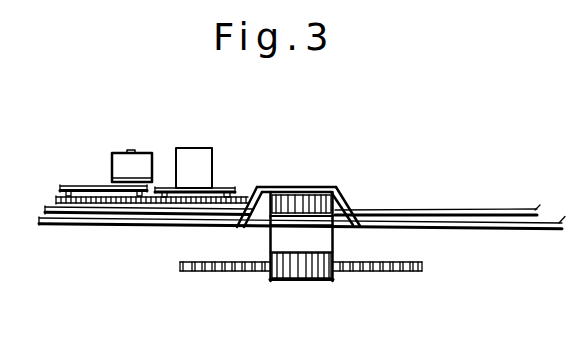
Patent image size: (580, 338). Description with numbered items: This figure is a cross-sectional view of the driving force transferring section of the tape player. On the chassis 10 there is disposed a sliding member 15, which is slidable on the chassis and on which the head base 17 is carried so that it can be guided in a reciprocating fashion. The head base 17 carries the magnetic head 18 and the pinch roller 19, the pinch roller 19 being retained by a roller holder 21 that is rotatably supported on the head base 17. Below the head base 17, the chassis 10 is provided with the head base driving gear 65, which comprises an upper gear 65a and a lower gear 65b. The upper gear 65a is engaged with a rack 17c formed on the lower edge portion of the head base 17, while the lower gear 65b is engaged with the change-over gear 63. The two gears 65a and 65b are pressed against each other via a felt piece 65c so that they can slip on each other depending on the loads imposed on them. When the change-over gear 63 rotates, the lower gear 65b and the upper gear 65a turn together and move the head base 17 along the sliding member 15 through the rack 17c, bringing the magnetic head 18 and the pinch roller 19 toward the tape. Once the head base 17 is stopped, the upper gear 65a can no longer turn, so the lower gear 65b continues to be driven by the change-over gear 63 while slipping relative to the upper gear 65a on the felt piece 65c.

The chassis 10 is at (478, 231).
The sliding member 15 is at (468, 209).
The head base 17 is at (95, 207).
The rack 17c is at (242, 193).
The magnetic head 18 is at (196, 160).
The pinch roller 19 is at (118, 163).
The roller holder 21 is at (72, 187).
The change-over gear 63 is at (234, 273).
The head base driving gear 65 is at (312, 239).
The upper gear 65a is at (350, 195).
The felt piece 65c is at (270, 236).
The lower gear 65b is at (303, 281).